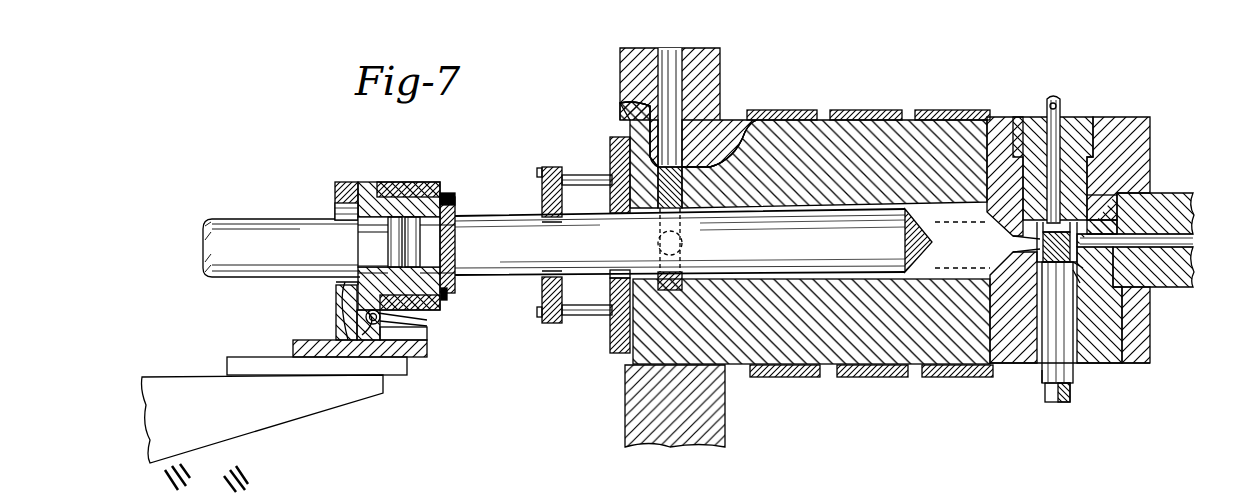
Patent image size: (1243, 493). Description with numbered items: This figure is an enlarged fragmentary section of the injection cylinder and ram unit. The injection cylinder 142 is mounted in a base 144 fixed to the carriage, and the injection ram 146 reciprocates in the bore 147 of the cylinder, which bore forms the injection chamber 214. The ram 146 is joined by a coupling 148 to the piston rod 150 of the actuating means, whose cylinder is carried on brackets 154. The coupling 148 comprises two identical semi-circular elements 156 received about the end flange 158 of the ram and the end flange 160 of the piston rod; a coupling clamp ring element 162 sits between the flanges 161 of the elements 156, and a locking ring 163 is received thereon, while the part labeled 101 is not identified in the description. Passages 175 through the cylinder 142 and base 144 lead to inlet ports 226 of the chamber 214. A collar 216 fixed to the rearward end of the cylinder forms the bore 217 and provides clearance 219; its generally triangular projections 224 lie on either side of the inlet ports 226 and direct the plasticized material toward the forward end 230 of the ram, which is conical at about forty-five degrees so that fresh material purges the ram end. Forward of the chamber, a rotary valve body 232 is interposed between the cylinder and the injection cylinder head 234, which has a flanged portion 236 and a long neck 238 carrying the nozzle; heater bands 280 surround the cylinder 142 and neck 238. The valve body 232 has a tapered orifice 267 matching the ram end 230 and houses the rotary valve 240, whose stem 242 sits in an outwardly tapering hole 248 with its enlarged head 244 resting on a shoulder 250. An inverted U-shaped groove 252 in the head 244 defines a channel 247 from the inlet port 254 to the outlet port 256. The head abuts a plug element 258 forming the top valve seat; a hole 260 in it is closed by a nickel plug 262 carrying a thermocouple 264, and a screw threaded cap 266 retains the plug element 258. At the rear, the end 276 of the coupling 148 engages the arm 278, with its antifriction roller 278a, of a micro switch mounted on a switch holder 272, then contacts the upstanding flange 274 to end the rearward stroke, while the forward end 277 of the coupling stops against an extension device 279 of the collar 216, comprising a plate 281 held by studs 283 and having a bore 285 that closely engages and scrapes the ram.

The coupling sleeve 101 is at (368, 182).
The injection cylinder 142 is at (925, 130).
The base 144 is at (625, 405).
The injection ram 146 is at (766, 222).
The bore 147 is at (818, 211).
The coupling 148 is at (428, 180).
The piston rod 150 is at (272, 206).
The brackets 154 is at (290, 414).
The semi-circular elements 156 is at (456, 204).
The end flange 158 is at (456, 240).
The end flange 160 is at (357, 244).
The flanges 161 is at (365, 320).
The coupling clamp ring element 162 is at (432, 168).
The locking ring 163 is at (447, 196).
The passages 175 is at (668, 60).
The injection chamber 214 is at (972, 275).
The collar 216 is at (612, 342).
The bore 217 is at (612, 273).
The clearance 219 is at (612, 214).
The projections 224 is at (682, 210).
The inlet ports 226 is at (684, 248).
The forward end 230 is at (922, 250).
The rotary valve body 232 is at (1110, 365).
The injection cylinder head 234 is at (1170, 265).
The flanged portion 236 is at (1150, 354).
The neck 238 is at (1194, 204).
The rotary valve 240 is at (1005, 240).
The stem 242 is at (1070, 380).
The enlarged head 244 is at (1074, 264).
The channel 247 is at (1104, 192).
The outwardly tapering hole 248 is at (1040, 372).
The shoulder 250 is at (1074, 274).
The inverted U-shaped groove 252 is at (1115, 224).
The inlet port 254 is at (1040, 246).
The outlet port 256 is at (1073, 252).
The plug element 258 is at (1085, 160).
The hole 260 is at (1062, 120).
The plug 262 is at (1007, 176).
The thermocouple 264 is at (1060, 106).
The screw threaded cap 266 is at (1106, 120).
The tapered orifice 267 is at (998, 272).
The switch holder 272 is at (407, 358).
The upstanding flange 274 is at (336, 300).
The end 276 is at (336, 284).
The forward end 277 is at (446, 292).
The arm 278 is at (427, 323).
The antifriction roller 278a is at (362, 330).
The extension device 279 is at (553, 160).
The heater bands 280 is at (832, 112).
The plate 281 is at (542, 289).
The studs 283 is at (569, 175).
The bore 285 is at (550, 218).